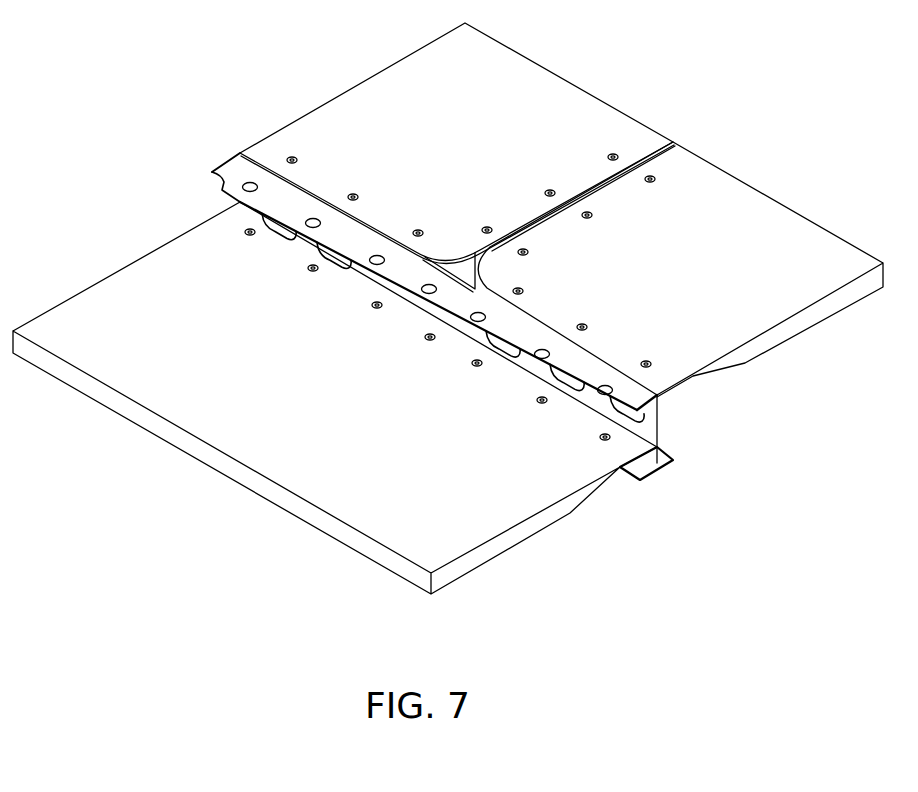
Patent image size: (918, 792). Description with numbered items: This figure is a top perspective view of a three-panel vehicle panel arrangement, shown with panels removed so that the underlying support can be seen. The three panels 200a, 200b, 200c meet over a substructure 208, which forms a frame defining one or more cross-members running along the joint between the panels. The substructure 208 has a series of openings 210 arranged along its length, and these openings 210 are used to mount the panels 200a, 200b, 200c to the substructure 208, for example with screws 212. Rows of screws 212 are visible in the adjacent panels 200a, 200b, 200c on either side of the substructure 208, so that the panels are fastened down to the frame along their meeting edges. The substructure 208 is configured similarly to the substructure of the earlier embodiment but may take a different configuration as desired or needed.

The panel 200a is at (758, 208).
The panel 200b is at (550, 88).
The panel 200c is at (152, 262).
The substructure 208 is at (660, 412).
The openings 210 is at (248, 183).
The screws 212 is at (352, 193).